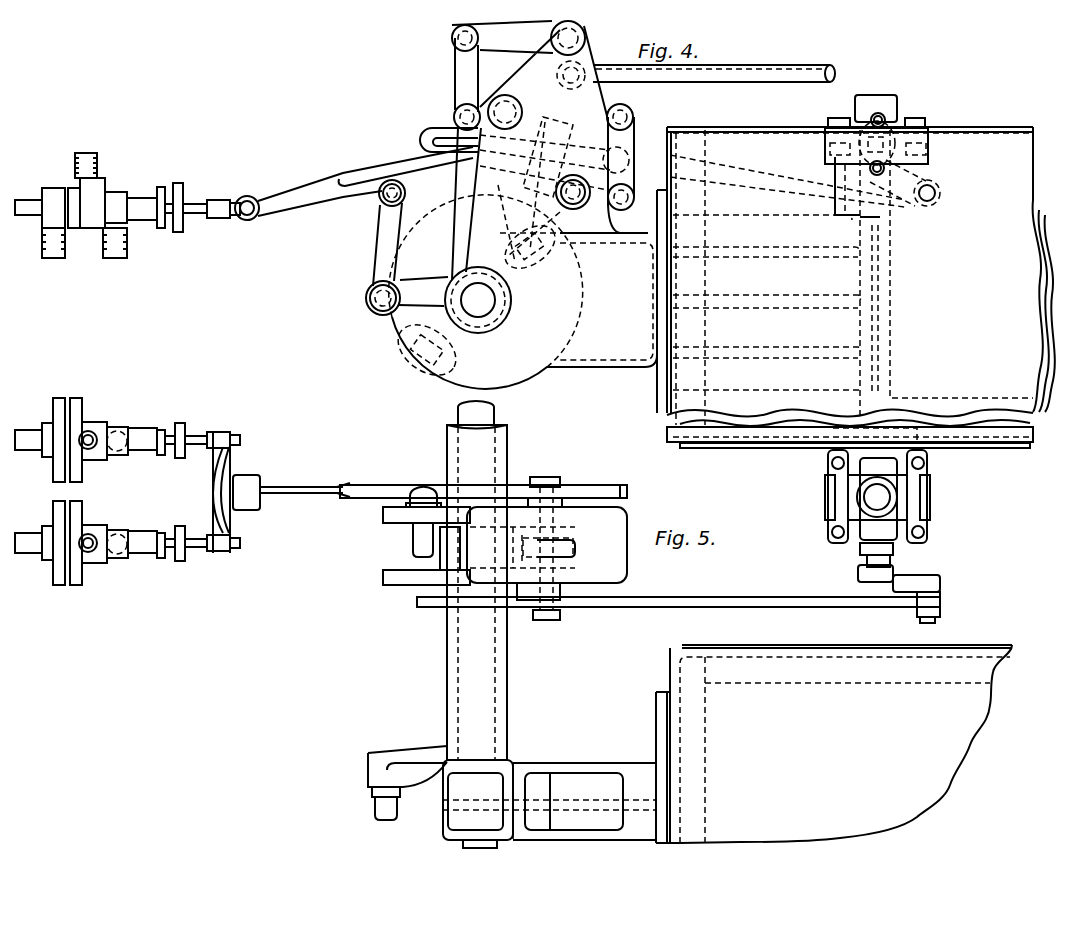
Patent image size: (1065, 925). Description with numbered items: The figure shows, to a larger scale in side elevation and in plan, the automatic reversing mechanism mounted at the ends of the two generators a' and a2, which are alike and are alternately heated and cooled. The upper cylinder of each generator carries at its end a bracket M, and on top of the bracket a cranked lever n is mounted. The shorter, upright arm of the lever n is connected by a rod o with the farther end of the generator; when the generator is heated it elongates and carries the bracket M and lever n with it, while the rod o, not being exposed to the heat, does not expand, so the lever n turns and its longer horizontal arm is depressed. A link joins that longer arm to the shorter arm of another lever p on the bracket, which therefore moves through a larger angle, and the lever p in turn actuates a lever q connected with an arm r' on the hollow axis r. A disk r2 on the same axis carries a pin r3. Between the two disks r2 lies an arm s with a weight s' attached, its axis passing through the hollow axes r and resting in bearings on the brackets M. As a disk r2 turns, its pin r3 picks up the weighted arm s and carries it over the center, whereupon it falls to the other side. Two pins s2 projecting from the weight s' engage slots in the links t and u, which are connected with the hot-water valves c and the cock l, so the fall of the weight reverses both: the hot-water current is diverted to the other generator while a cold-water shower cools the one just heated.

In FIG. 4, the hot-water-circulation valve c is at (137, 205).
In FIG. 5, the hot-water-circulation valve c is at (182, 491).
In FIG. 4, the link t is at (365, 181).
In FIG. 5, the link t is at (483, 477).
In FIG. 4, the link u is at (448, 126).
In FIG. 5, the link u is at (678, 591).
In FIG. 4, the cranked lever n is at (529, 68).
In FIG. 4, the lever p is at (551, 180).
In FIG. 4, the lever q is at (413, 233).
In FIG. 5, the hollow axis r is at (477, 580).
In FIG. 4, the arm r' is at (407, 296).
In FIG. 5, the arm r' is at (407, 771).
In FIG. 4, the disk r2 is at (453, 204).
In FIG. 5, the disk r2 is at (412, 537).
In FIG. 5, the pin r3 is at (415, 540).
In FIG. 5, the arm s is at (450, 548).
In FIG. 5, the weight s' is at (547, 553).
In FIG. 5, the pin s2 is at (545, 548).
In FIG. 4, the bracket M is at (528, 301).
In FIG. 5, the bracket M is at (550, 804).
In FIG. 4, the rod o is at (714, 62).
In FIG. 4, the cock l is at (882, 145).
In FIG. 5, the cock l is at (882, 536).
In FIG. 4, the generator a2 is at (861, 287).
In FIG. 5, the generator a' is at (834, 744).